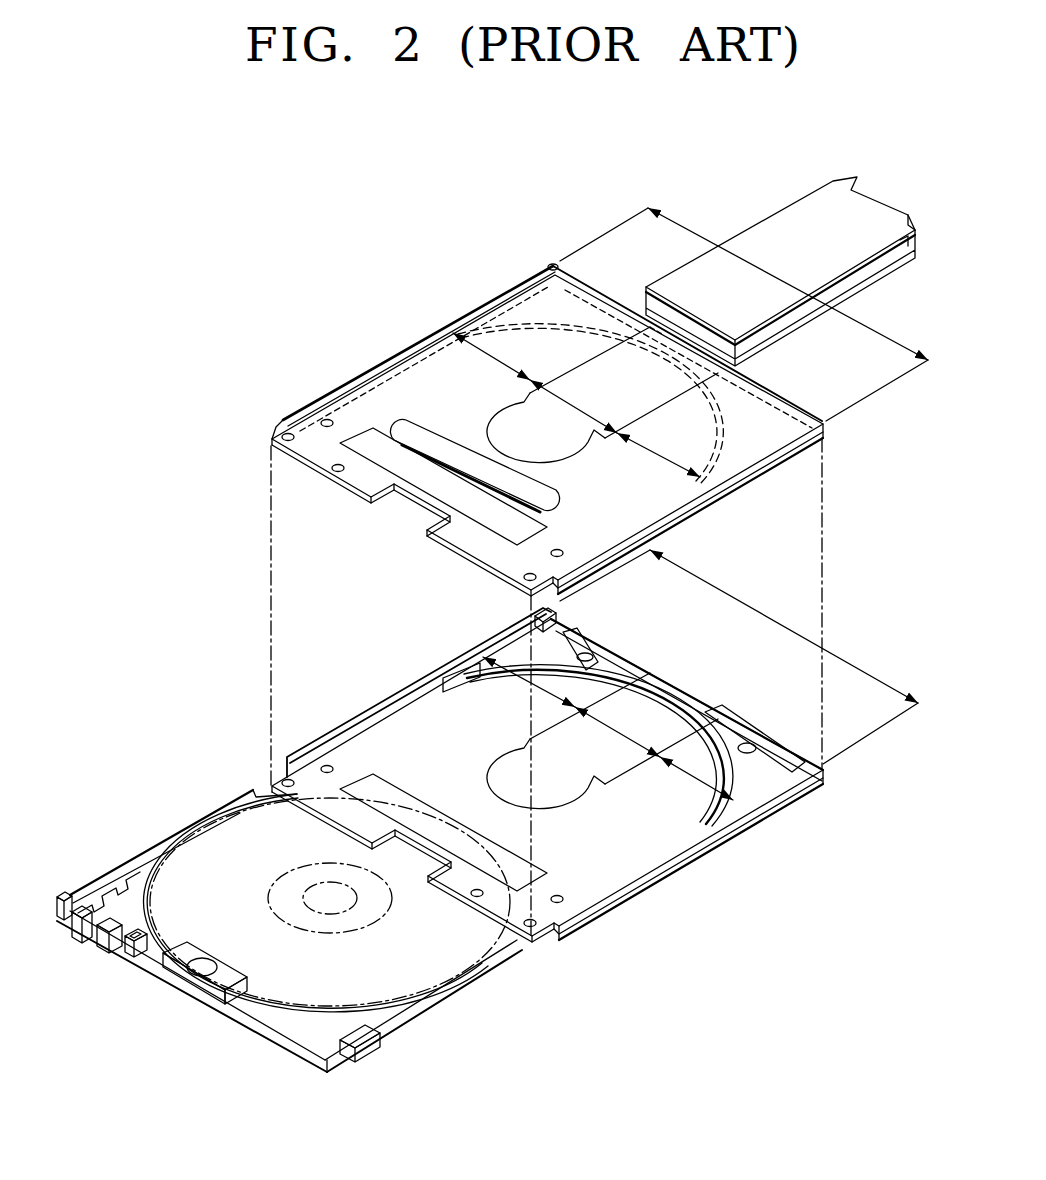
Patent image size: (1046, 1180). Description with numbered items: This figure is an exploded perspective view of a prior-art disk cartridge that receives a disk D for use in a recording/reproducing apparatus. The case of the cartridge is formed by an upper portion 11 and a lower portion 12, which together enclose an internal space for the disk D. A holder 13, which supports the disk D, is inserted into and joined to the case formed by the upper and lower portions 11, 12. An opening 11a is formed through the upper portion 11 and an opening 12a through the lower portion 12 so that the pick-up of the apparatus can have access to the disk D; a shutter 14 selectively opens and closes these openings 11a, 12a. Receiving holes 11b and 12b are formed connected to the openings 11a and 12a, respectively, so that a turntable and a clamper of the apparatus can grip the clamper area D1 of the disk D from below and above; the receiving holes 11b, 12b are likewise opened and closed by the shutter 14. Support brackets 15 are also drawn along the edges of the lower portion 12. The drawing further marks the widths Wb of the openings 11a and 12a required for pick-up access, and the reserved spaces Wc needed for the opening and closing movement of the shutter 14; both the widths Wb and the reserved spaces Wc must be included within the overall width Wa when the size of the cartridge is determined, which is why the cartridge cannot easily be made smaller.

The upper portion of the case 11 is at (385, 378).
The opening in the upper portion 11a is at (648, 360).
The receiving hole in the upper portion 11b is at (550, 442).
The lower portion of the case 12 is at (680, 857).
The opening in the lower portion 12a is at (658, 718).
The receiving hole in the lower portion 12b is at (550, 800).
The holder 13 is at (187, 983).
The shutter 14 is at (751, 238).
The support bracket 15 is at (573, 645).
The disk D is at (270, 817).
The clamper area D1 is at (287, 884).
The overall width Wa is at (744, 486).
The width of the openings Wb is at (595, 568).
The reserved space Wc is at (593, 567).